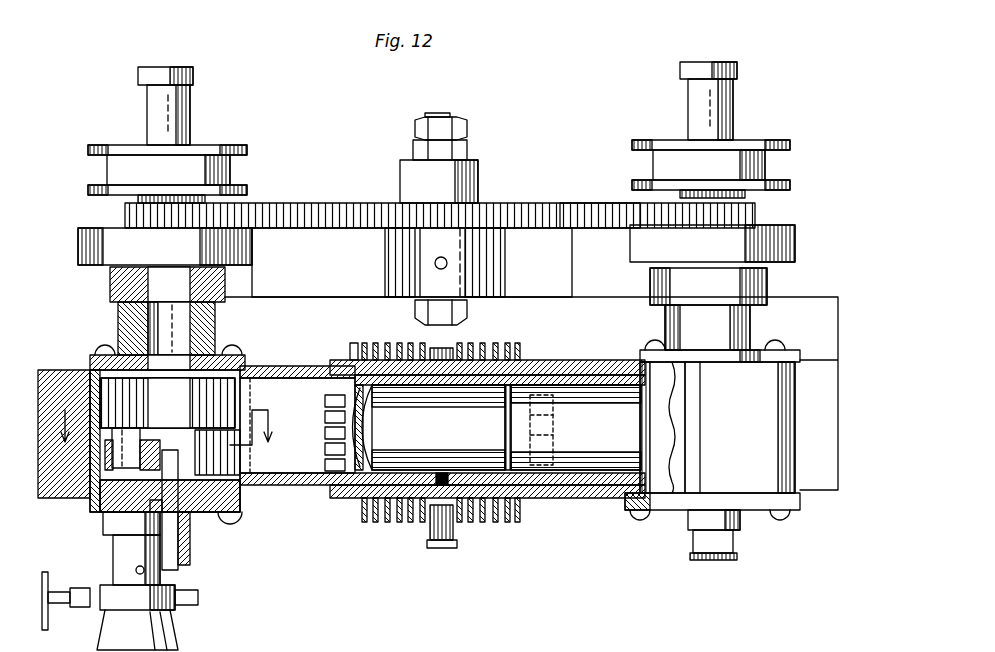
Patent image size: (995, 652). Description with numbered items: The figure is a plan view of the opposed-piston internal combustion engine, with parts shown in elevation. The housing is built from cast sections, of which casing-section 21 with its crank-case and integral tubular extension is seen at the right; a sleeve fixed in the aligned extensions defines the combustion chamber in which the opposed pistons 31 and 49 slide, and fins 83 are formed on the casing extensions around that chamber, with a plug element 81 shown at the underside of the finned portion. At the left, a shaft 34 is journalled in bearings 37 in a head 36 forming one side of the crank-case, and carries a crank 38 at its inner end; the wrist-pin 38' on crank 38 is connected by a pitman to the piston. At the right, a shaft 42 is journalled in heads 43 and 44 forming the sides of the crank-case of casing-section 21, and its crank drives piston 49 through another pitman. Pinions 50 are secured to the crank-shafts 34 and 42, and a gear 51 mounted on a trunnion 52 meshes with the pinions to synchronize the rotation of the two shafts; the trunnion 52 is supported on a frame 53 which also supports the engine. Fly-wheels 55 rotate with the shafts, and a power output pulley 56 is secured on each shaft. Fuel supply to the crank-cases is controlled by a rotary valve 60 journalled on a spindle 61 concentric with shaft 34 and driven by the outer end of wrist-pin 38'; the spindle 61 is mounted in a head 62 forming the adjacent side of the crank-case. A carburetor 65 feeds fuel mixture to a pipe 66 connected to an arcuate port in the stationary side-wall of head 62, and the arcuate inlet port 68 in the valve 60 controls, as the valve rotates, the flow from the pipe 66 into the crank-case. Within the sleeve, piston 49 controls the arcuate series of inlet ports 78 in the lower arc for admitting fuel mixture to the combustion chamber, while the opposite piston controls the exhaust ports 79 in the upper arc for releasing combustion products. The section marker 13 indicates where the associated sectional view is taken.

The power output pulley 56 is at (228, 170).
The shaft 42 is at (728, 133).
The pinions 50 is at (756, 209).
The gear 51 is at (580, 201).
The fly-wheels 55 is at (810, 252).
The frame 53 is at (412, 262).
The trunnion 52 is at (465, 158).
The head 36 is at (112, 293).
The shaft 34 is at (160, 327).
The bearings 37 is at (226, 285).
The head 44 is at (752, 350).
The casing-section 21 is at (740, 427).
The head 43 is at (680, 512).
The crank 38 is at (191, 403).
The wrist-pin 38' is at (58, 508).
The arcuate inlet port 68 is at (148, 445).
The rotary valve 60 is at (218, 452).
The section line 13 is at (177, 418).
The fins 83 is at (384, 515).
The plug 81 is at (440, 472).
The piston 31 is at (372, 430).
The exhaust ports 79 is at (340, 440).
The piston 49 is at (573, 427).
The inlet ports 78 is at (530, 422).
The head 62 is at (245, 505).
The pipe 66 is at (113, 560).
The spindle 61 is at (172, 570).
The carburetor 65 is at (175, 612).